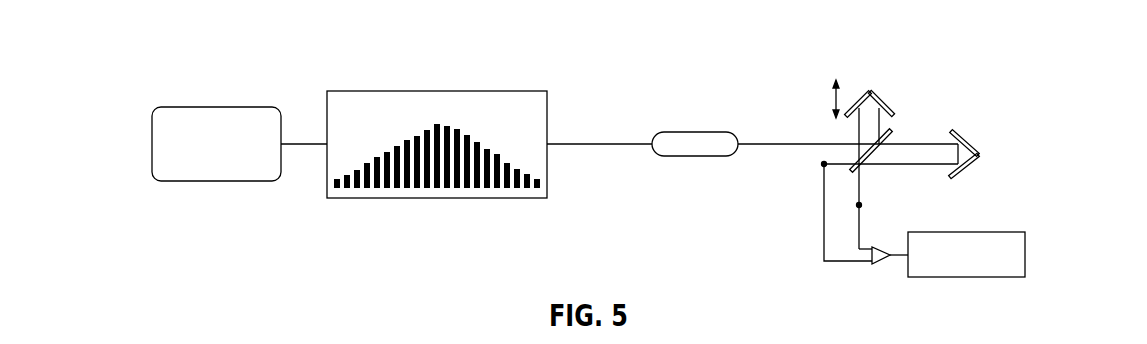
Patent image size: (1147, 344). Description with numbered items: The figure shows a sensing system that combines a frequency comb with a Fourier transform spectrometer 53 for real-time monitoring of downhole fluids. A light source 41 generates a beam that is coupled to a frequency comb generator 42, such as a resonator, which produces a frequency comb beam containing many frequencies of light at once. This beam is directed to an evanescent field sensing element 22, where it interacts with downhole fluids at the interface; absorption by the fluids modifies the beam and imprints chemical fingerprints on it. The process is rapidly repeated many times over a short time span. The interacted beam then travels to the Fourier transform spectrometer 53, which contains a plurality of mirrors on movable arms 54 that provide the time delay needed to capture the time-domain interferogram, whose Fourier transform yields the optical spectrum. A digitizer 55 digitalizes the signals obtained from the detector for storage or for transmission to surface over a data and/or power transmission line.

The Fourier transform spectrometer 53 is at (1016, 48).
The light source 41 is at (186, 107).
The frequency comb generator 42 is at (363, 91).
The evanescent field sensing element 22 is at (670, 132).
The mirrors on movable arms 54 is at (883, 99).
The digitizer 55 is at (1008, 232).